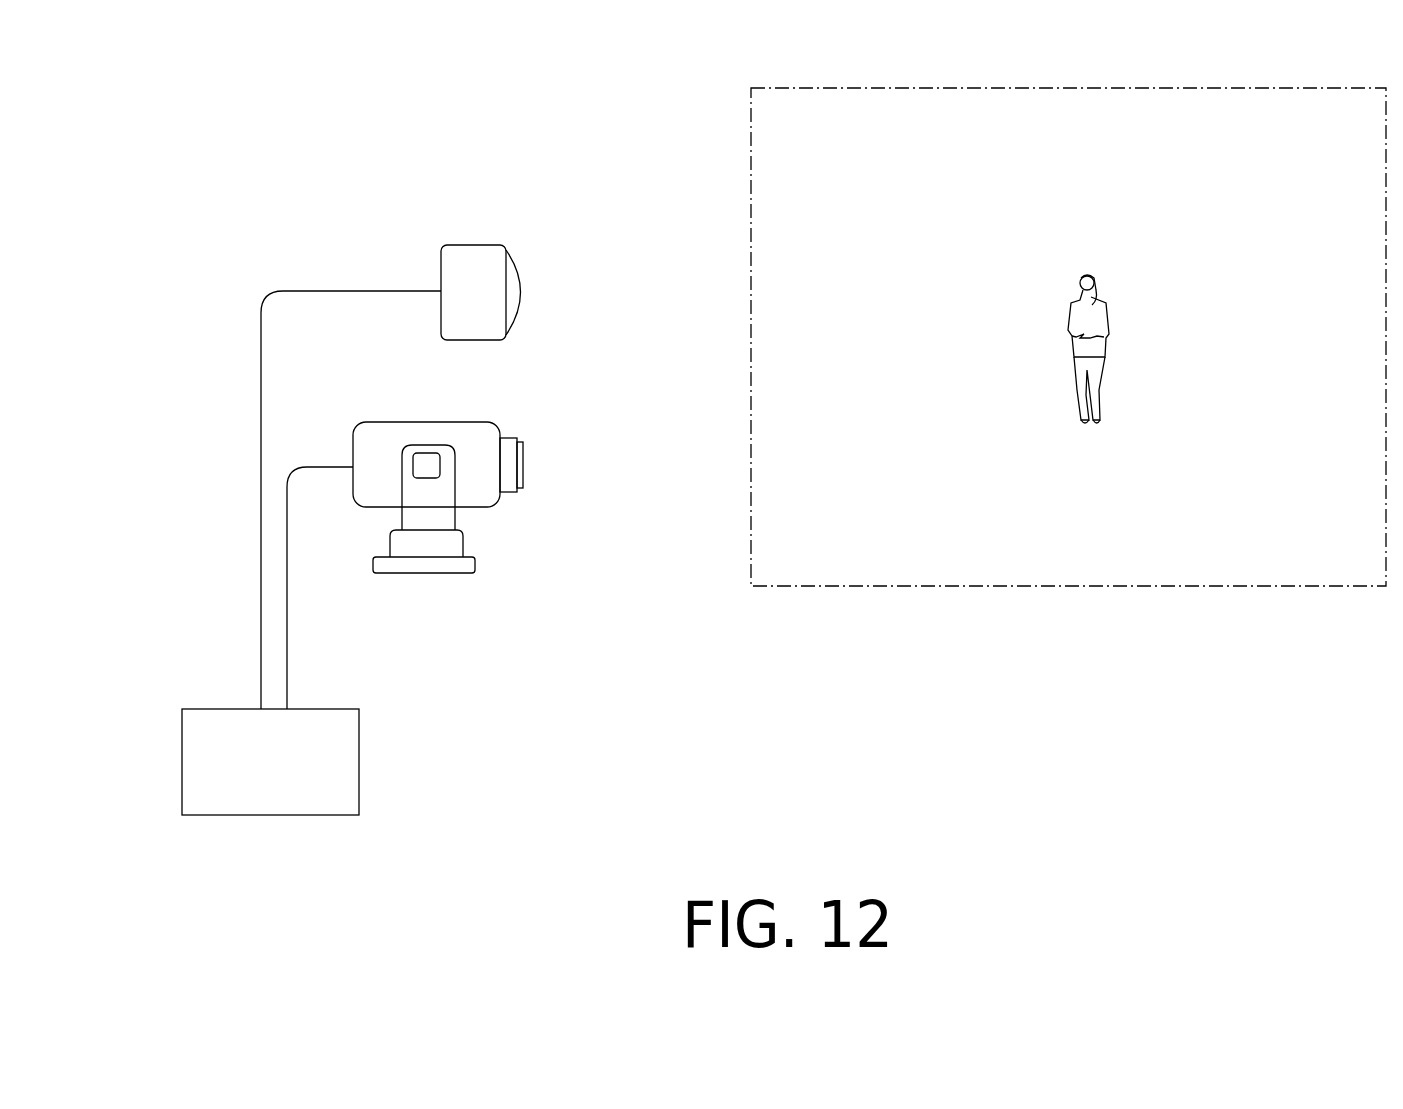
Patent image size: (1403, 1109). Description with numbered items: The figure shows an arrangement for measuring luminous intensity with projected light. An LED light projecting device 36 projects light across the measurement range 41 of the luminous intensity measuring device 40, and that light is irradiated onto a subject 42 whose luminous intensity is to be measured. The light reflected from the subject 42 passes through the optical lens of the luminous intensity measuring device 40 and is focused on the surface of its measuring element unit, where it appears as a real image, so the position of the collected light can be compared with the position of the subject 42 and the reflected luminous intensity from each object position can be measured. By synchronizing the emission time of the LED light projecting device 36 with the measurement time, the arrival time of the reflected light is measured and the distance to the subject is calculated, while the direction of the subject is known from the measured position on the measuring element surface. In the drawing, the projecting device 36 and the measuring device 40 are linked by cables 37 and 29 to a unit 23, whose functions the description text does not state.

The control unit 23 is at (359, 757).
The cable 29 is at (287, 648).
The LED light projecting device 36 is at (502, 243).
The cable 37 is at (261, 385).
The luminous intensity measuring device 40 is at (497, 423).
The measurement range 41 is at (905, 88).
The subject 42 is at (1068, 295).